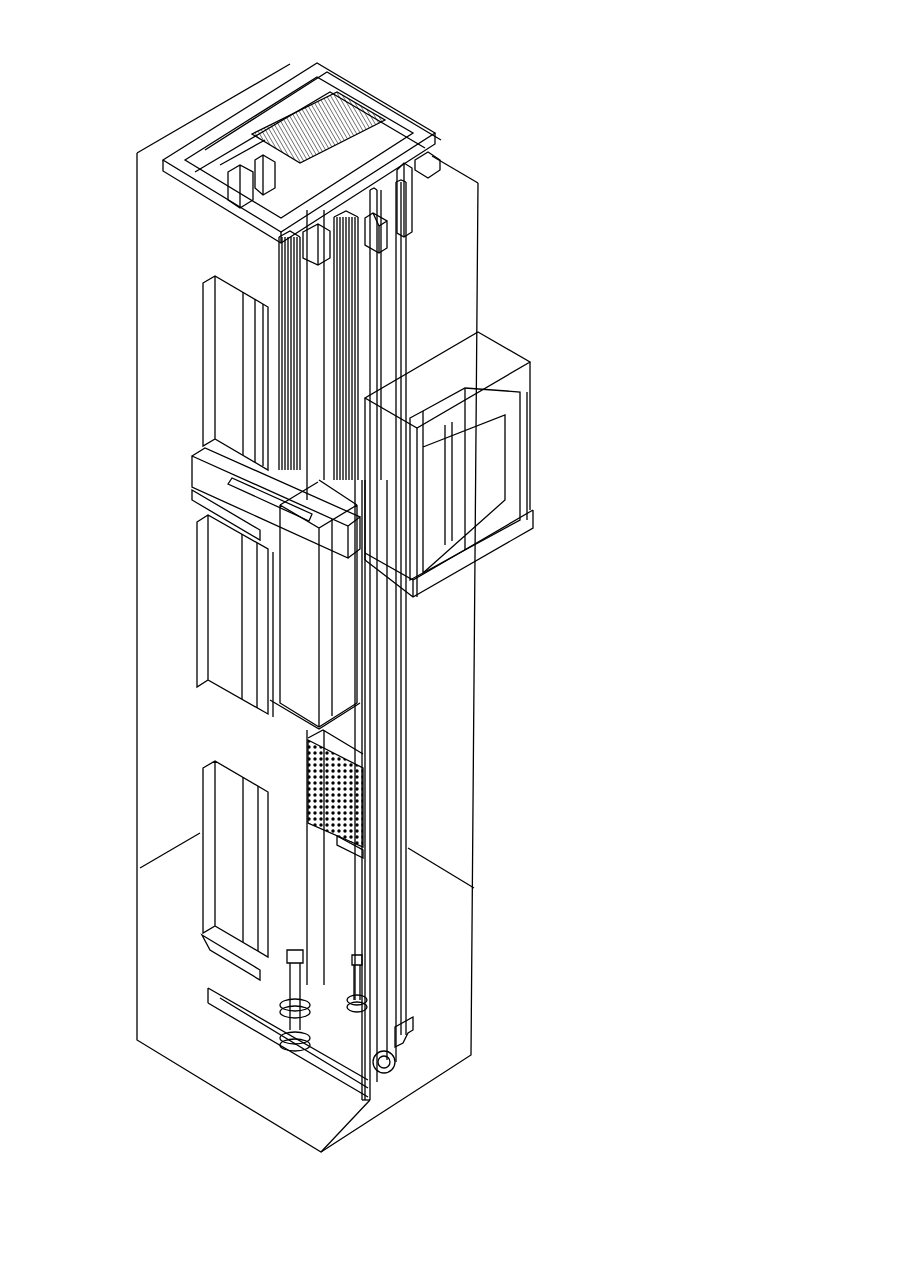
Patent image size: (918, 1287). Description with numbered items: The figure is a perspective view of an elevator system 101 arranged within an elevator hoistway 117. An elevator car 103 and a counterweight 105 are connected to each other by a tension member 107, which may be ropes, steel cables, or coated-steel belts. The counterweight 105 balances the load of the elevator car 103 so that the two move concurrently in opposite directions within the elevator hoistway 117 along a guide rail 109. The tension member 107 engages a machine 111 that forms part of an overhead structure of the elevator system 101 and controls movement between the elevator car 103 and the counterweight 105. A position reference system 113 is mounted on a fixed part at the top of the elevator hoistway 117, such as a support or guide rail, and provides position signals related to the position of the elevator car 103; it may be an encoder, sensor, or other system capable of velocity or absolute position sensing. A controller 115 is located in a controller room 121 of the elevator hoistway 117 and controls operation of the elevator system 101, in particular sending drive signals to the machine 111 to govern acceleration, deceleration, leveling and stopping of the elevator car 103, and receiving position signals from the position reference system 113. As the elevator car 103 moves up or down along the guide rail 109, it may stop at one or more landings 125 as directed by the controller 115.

The elevator system 101 is at (500, 85).
The elevator car 103 is at (307, 642).
The counterweight 105 is at (357, 807).
The tension member 107 is at (306, 372).
The guide rail 109 is at (383, 743).
The machine 111 is at (230, 150).
The position reference system 113 is at (440, 170).
The controller 115 is at (478, 477).
The elevator hoistway 117 is at (188, 748).
The controller room 121 is at (535, 356).
The landings 125 is at (200, 363).